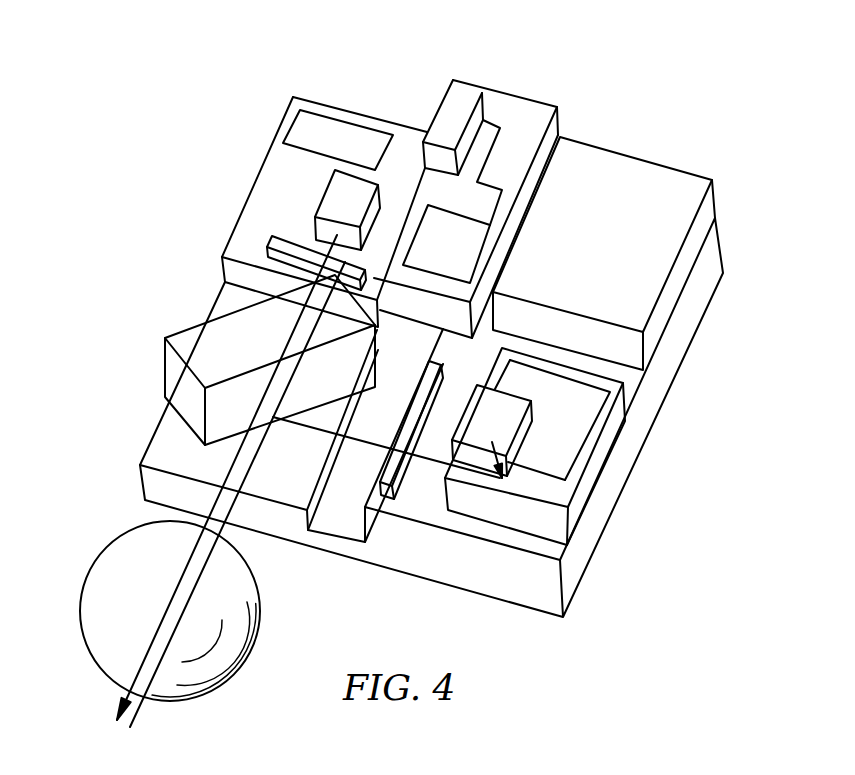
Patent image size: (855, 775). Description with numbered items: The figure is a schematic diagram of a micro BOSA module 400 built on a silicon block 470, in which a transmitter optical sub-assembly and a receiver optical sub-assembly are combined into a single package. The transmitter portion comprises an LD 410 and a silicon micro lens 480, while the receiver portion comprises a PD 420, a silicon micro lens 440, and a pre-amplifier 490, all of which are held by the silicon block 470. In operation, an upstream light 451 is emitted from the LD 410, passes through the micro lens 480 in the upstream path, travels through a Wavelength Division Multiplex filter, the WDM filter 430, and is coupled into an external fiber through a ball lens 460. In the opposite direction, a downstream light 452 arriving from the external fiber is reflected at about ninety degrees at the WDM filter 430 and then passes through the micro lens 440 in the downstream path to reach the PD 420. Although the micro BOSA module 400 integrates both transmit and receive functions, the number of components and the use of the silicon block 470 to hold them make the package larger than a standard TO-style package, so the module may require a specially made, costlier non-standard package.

The micro BOSA module 400 is at (260, 38).
The LD 410 is at (323, 193).
The PD 420 is at (517, 445).
The WDM filter 430 is at (203, 342).
The silicon micro lens 440 is at (400, 480).
The upstream light 451 is at (150, 642).
The downstream light 452 is at (198, 587).
The ball lens 460 is at (225, 670).
The silicon block 470 is at (650, 368).
The silicon micro lens 480 is at (268, 242).
The pre-amplifier 490 is at (625, 192).